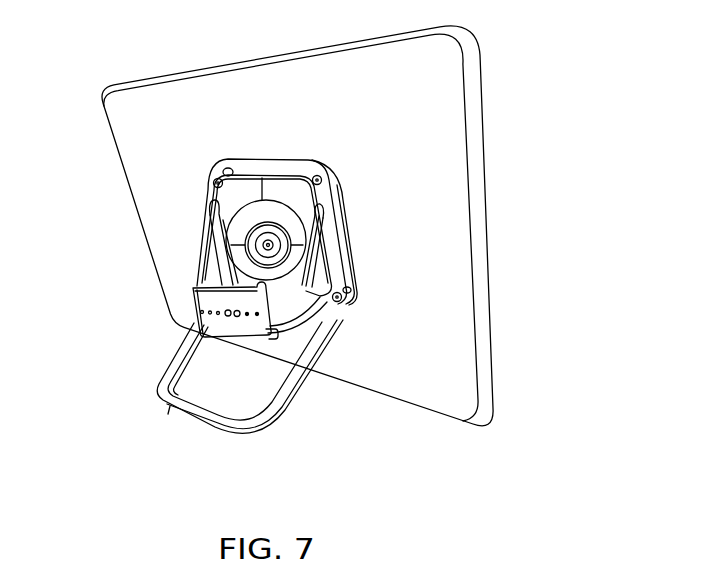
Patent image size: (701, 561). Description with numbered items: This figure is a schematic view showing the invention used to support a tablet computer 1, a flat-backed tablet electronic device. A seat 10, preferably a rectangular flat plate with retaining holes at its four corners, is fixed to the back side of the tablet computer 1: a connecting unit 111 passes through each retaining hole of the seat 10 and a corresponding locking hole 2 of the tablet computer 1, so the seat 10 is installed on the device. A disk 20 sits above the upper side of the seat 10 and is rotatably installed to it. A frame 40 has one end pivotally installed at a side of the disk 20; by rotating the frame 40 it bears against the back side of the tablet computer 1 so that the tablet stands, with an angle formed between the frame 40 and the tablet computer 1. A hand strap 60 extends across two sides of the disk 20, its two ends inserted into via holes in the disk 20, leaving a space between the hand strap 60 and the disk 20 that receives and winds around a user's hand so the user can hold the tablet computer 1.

The tablet computer 1 is at (477, 143).
The locking hole 2 is at (230, 168).
The seat 10 is at (302, 244).
The disk 20 is at (214, 195).
The frame 40 is at (168, 360).
The hand strap 60 is at (200, 267).
The connecting unit 111 is at (213, 177).